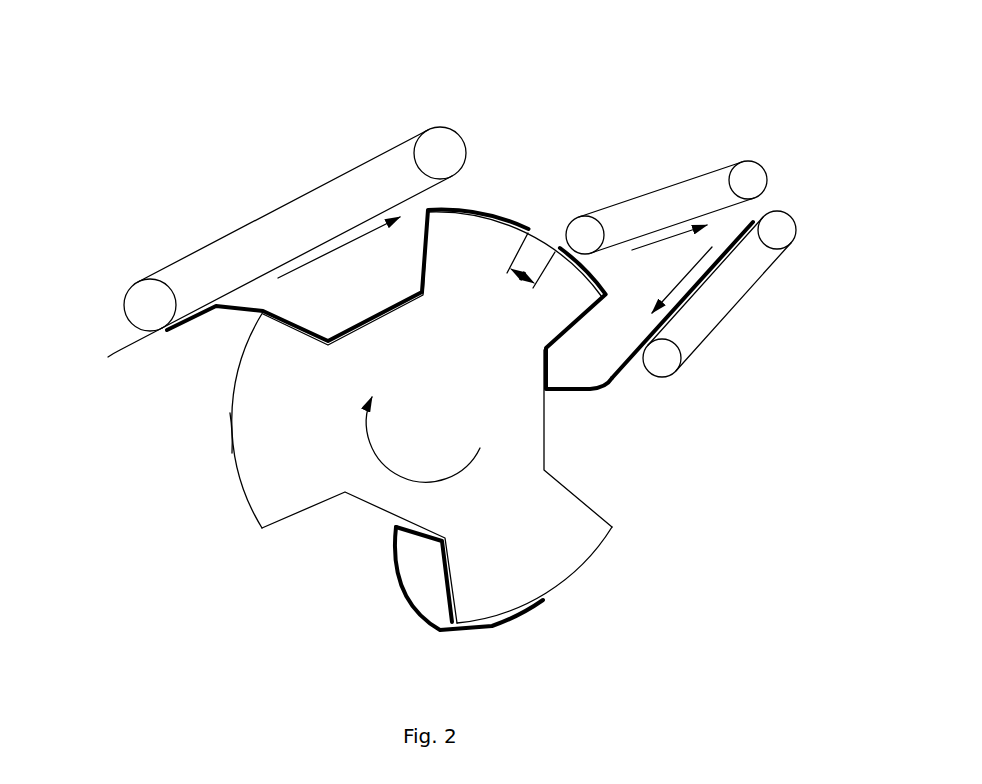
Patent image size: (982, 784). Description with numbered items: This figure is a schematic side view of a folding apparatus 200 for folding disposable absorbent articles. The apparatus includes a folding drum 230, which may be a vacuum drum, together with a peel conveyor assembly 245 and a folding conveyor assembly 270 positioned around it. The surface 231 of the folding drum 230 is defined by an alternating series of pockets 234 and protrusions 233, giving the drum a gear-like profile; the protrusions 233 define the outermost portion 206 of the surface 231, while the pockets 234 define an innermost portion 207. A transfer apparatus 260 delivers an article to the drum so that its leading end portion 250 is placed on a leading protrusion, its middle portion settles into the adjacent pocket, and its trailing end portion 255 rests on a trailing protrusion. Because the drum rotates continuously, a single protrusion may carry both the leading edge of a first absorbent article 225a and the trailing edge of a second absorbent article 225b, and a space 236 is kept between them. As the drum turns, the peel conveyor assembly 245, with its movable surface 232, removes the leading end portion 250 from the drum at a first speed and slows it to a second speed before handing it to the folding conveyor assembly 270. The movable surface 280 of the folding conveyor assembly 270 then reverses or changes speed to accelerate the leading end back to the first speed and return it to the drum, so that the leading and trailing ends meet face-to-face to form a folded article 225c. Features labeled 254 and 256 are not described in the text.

The folding apparatus 200 is at (302, 152).
The outermost portion 206 is at (232, 453).
The innermost portion 207 is at (363, 502).
The first absorbent article 225a is at (300, 337).
The second absorbent article 225b is at (602, 390).
The folded article 225c is at (523, 612).
The folding drum 230 is at (437, 413).
The surface 231 is at (230, 413).
The movable surface 232 is at (705, 215).
The protrusion 233 is at (258, 478).
The pocket 234 is at (313, 525).
The space 236 is at (520, 282).
The peel conveyor assembly 245 is at (700, 160).
The leading end portion 250 is at (483, 202).
The substrate web 254 is at (112, 348).
The trailing end portion 255 is at (215, 333).
The liner thickness 256 is at (508, 272).
The transfer apparatus 260 is at (165, 243).
The folding conveyor assembly 270 is at (755, 315).
The movable surface 280 is at (680, 310).